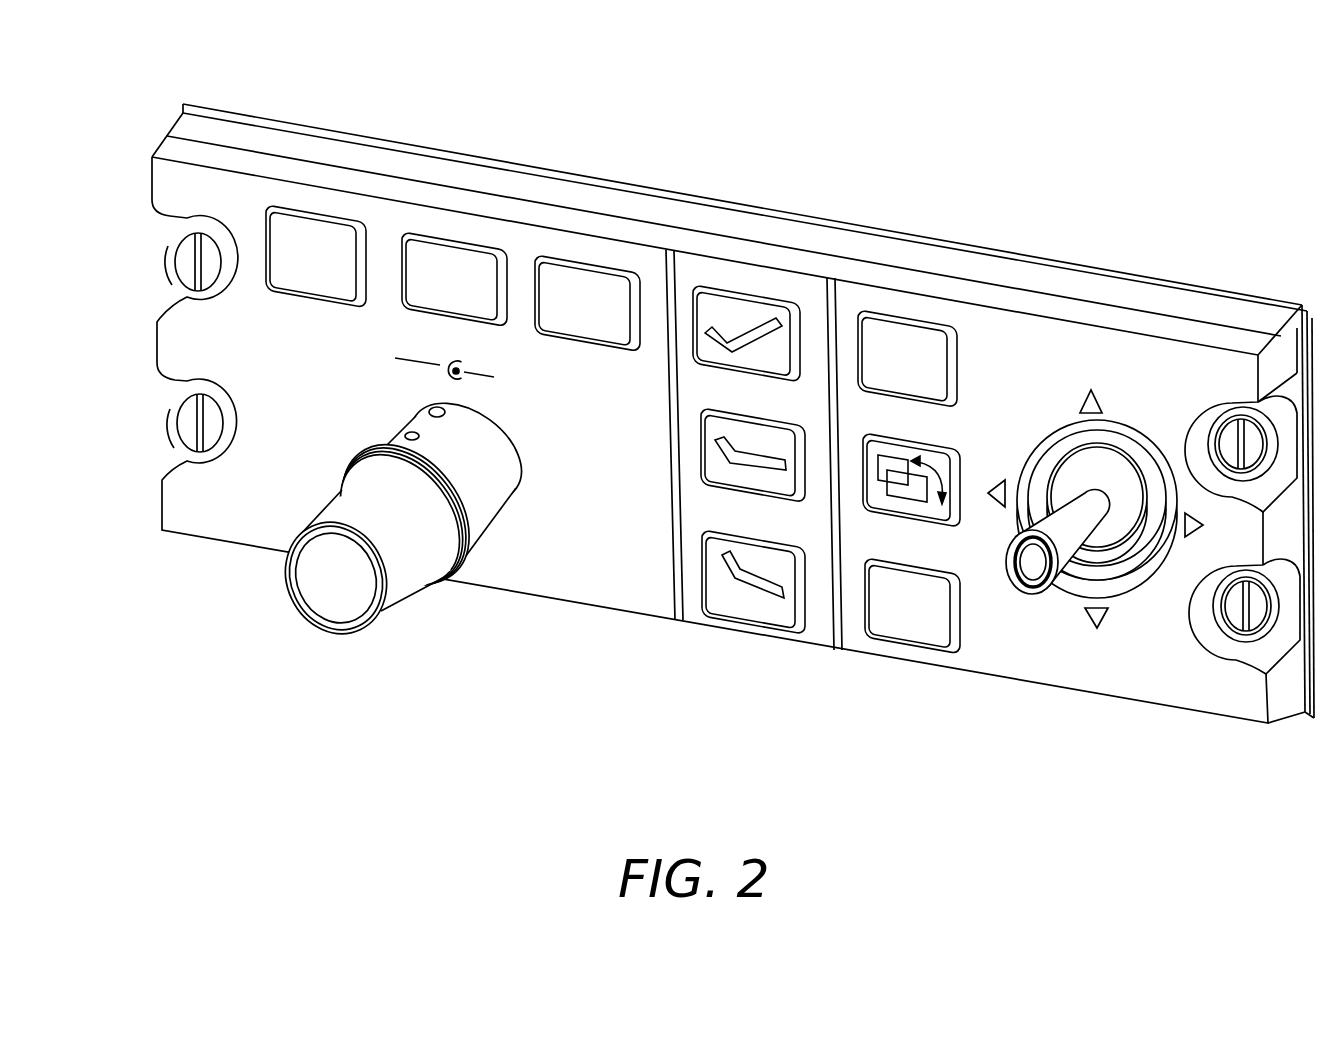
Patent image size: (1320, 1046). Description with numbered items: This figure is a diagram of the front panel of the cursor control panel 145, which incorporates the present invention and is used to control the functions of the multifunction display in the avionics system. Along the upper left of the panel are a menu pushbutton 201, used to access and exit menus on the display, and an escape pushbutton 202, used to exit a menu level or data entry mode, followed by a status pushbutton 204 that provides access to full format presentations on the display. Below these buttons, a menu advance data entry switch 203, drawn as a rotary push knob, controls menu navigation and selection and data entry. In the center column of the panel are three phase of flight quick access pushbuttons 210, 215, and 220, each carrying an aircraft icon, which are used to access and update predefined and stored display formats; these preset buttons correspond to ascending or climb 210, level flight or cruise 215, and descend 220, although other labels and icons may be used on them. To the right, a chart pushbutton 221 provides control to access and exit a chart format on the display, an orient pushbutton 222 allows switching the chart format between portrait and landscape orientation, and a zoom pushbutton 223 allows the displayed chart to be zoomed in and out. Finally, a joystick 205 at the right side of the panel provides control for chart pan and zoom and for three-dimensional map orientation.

The cursor control panel 145 is at (170, 598).
The menu (MENU) pushbutton 201 is at (333, 213).
The escape (ESC) pushbutton 202 is at (483, 240).
The menu advance (MENU ADV) data entry switch 203 is at (388, 605).
The status (STAT) pushbutton 204 is at (610, 257).
The joystick 205 is at (1067, 593).
The ascending or climb quick access pushbutton 210 is at (750, 287).
The level flight or cruise quick access pushbutton 215 is at (700, 440).
The descend quick access pushbutton 220 is at (757, 618).
The chart (CHART) pushbutton 221 is at (940, 325).
The orient pushbutton 222 is at (945, 443).
The zoom (ZOOM) pushbutton 223 is at (908, 645).